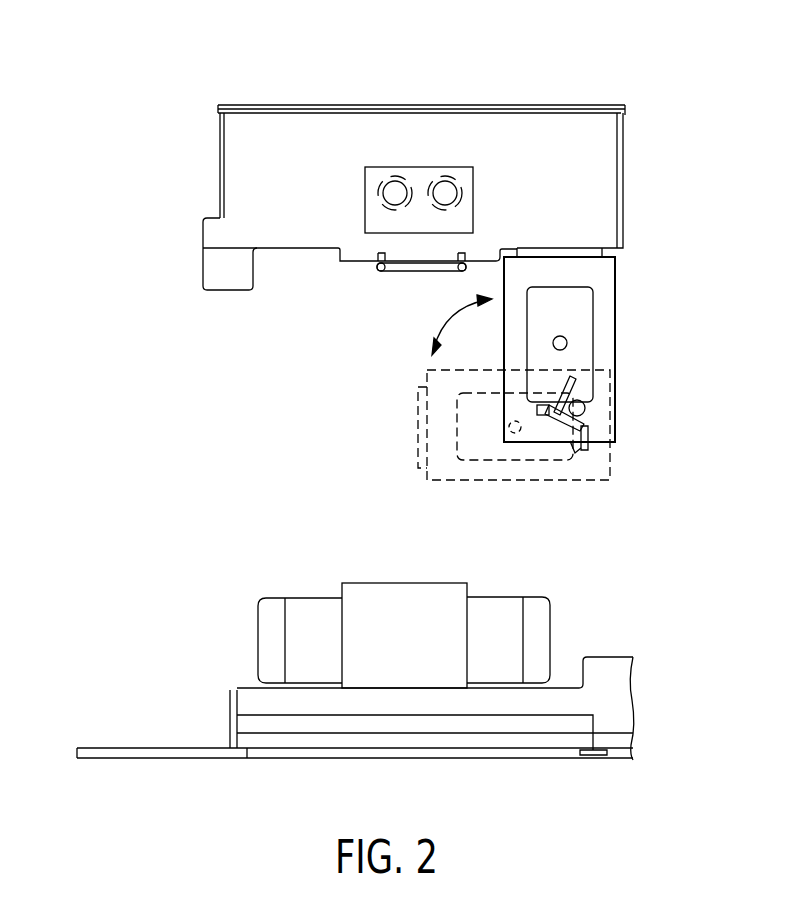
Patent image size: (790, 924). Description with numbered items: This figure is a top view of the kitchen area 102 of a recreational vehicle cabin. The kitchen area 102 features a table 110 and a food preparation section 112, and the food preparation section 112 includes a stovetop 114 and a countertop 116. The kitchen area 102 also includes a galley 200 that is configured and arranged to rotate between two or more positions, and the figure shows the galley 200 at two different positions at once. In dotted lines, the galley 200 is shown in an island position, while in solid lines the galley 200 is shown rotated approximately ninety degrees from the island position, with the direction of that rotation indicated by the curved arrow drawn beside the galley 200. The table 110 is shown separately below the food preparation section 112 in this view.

The kitchen area 102 is at (112, 102).
The table 110 is at (317, 595).
The food preparation section 112 is at (627, 188).
The stovetop 114 is at (425, 167).
The countertop 116 is at (569, 203).
The galley 200 is at (615, 293).